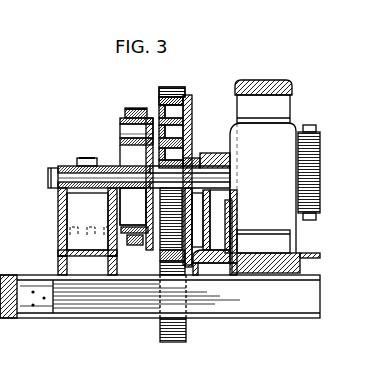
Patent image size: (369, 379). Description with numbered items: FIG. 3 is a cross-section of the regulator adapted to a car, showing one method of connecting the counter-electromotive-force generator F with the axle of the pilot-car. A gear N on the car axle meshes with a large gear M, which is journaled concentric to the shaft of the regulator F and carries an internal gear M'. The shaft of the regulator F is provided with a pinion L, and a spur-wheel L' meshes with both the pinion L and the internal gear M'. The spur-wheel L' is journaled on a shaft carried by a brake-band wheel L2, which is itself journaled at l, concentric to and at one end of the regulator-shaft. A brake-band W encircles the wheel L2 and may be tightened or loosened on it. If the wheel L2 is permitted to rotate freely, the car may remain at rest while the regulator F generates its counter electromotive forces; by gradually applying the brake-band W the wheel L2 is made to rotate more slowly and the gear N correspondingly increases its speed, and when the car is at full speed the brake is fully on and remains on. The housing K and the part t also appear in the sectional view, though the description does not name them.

The journal l is at (70, 170).
The pinion L is at (141, 204).
The spur-wheel L' is at (159, 95).
The brake-band wheel L2 is at (122, 141).
The brake-band W is at (125, 112).
The large gear M is at (175, 171).
The internal gear M' is at (188, 98).
The counter-electromotive-force generator F is at (262, 80).
The housing K is at (260, 188).
The gear N is at (186, 336).
The spring t is at (308, 125).